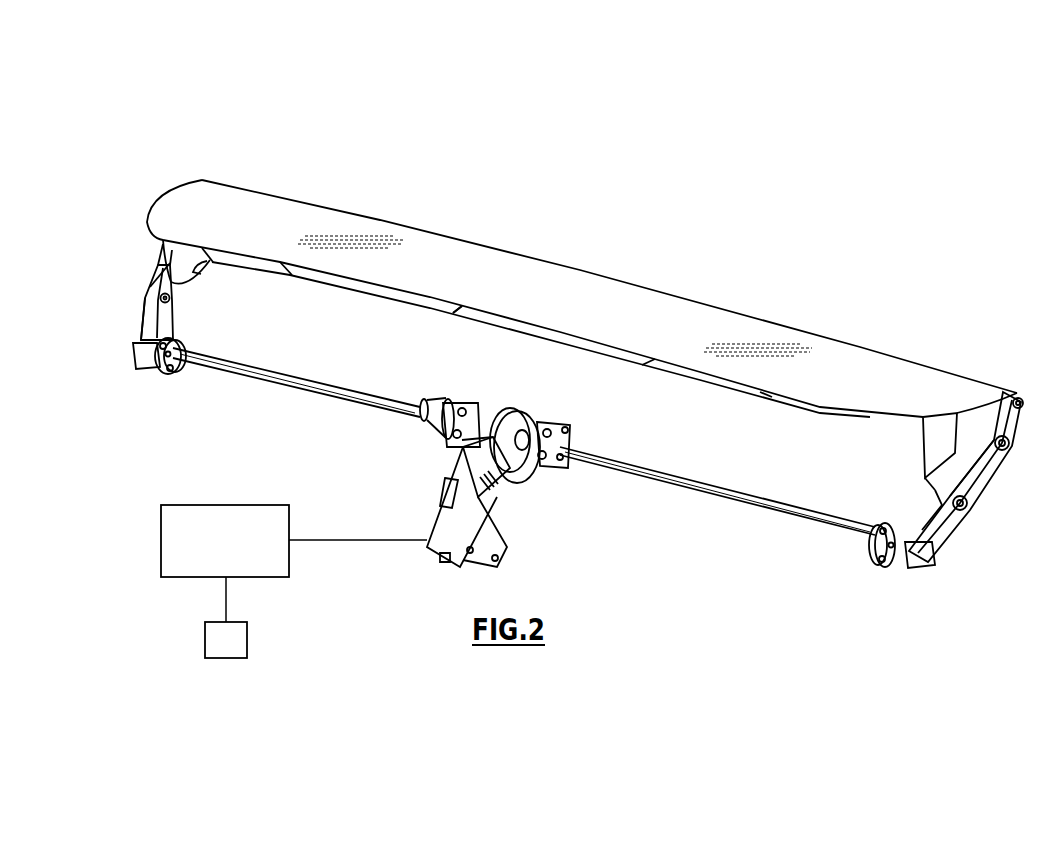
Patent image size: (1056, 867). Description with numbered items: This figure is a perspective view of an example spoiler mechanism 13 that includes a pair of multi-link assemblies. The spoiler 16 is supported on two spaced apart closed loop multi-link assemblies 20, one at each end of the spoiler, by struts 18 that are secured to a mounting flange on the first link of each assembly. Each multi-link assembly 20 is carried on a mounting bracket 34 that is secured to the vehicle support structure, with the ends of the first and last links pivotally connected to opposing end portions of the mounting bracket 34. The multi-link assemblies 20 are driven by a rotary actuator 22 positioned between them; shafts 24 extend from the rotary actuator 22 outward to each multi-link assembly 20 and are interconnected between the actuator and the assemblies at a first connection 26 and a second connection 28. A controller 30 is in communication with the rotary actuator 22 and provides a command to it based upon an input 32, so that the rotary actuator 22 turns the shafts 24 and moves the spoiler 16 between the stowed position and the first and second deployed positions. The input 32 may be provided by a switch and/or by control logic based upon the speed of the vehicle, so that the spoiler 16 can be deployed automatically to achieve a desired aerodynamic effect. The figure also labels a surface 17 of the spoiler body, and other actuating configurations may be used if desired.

The spoiler mechanism 13 is at (773, 272).
The spoiler 16 is at (605, 287).
The surface of spoiler body 17 is at (460, 310).
The strut 18 is at (197, 267).
The multi-link assembly 20 is at (140, 317).
The rotary actuator 22 is at (473, 513).
The shaft 24 is at (333, 385).
The first connection 26 is at (565, 430).
The second connection 28 is at (873, 552).
The controller 30 is at (241, 552).
The input 32 is at (238, 643).
The mounting bracket 34 is at (143, 298).